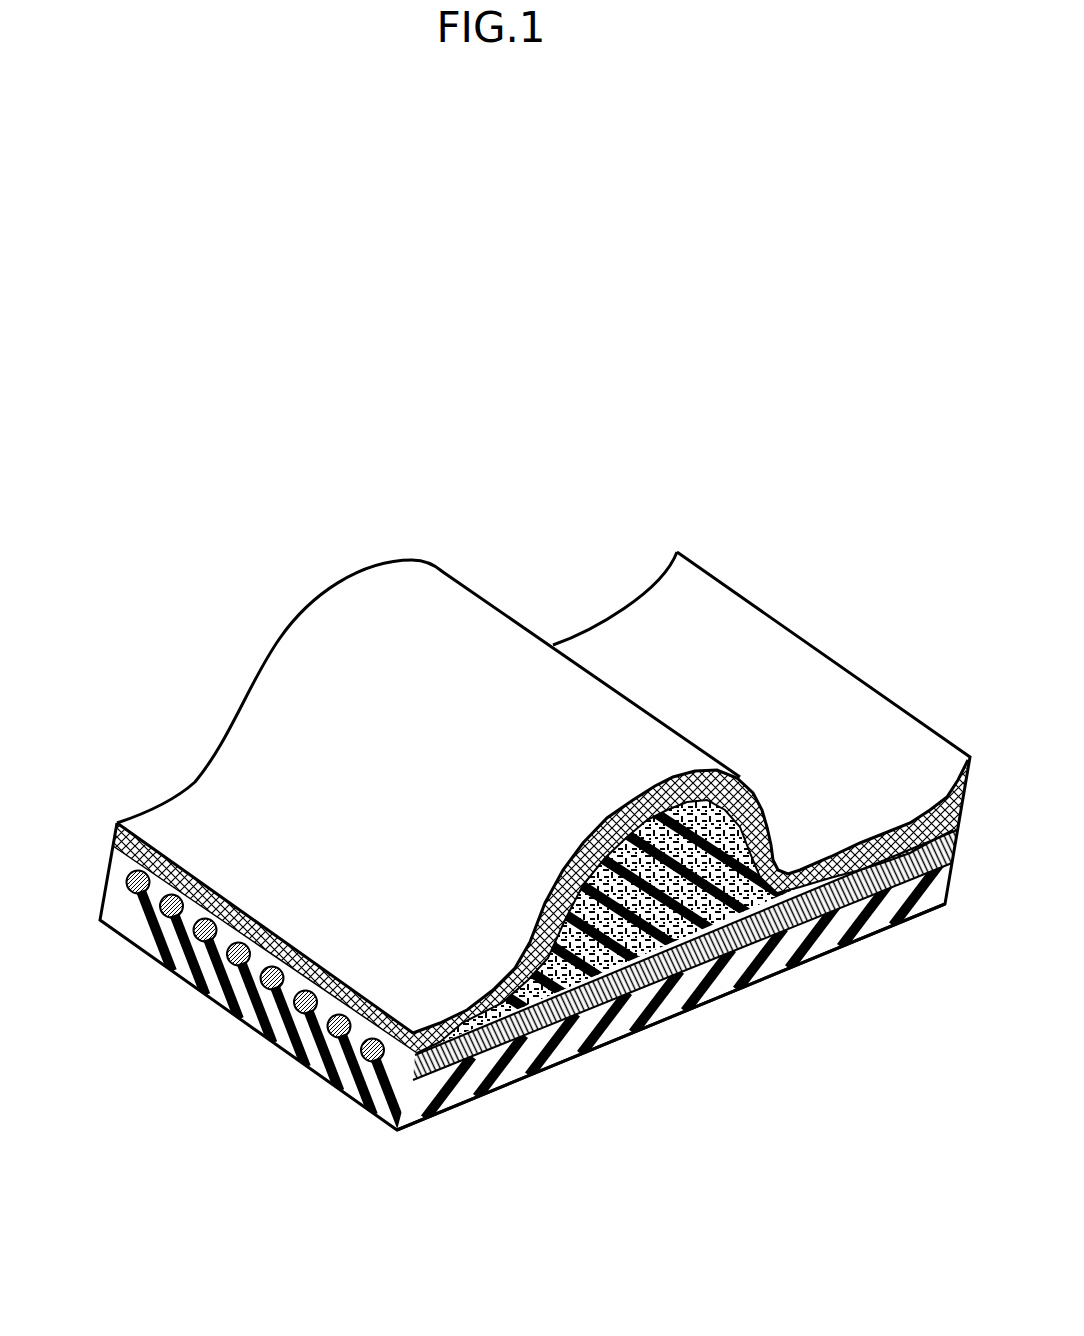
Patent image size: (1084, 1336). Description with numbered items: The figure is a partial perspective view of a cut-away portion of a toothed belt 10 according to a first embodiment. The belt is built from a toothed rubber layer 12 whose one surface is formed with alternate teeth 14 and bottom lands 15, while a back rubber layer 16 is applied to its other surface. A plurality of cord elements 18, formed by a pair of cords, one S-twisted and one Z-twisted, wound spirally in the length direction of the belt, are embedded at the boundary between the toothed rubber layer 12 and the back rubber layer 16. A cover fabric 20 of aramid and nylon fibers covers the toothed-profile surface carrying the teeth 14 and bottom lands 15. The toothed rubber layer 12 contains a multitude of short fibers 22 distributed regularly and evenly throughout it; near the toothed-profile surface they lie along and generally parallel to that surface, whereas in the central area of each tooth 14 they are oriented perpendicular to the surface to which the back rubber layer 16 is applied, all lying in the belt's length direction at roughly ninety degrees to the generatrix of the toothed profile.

The toothed belt 10 is at (575, 537).
The toothed rubber layer 12 is at (702, 980).
The teeth 14 is at (773, 948).
The bottom lands 15 is at (468, 1068).
The back rubber layer 16 is at (158, 930).
The cord elements 18 is at (330, 1037).
The cover fabric 20 is at (763, 662).
The short fibers 22 is at (600, 1005).